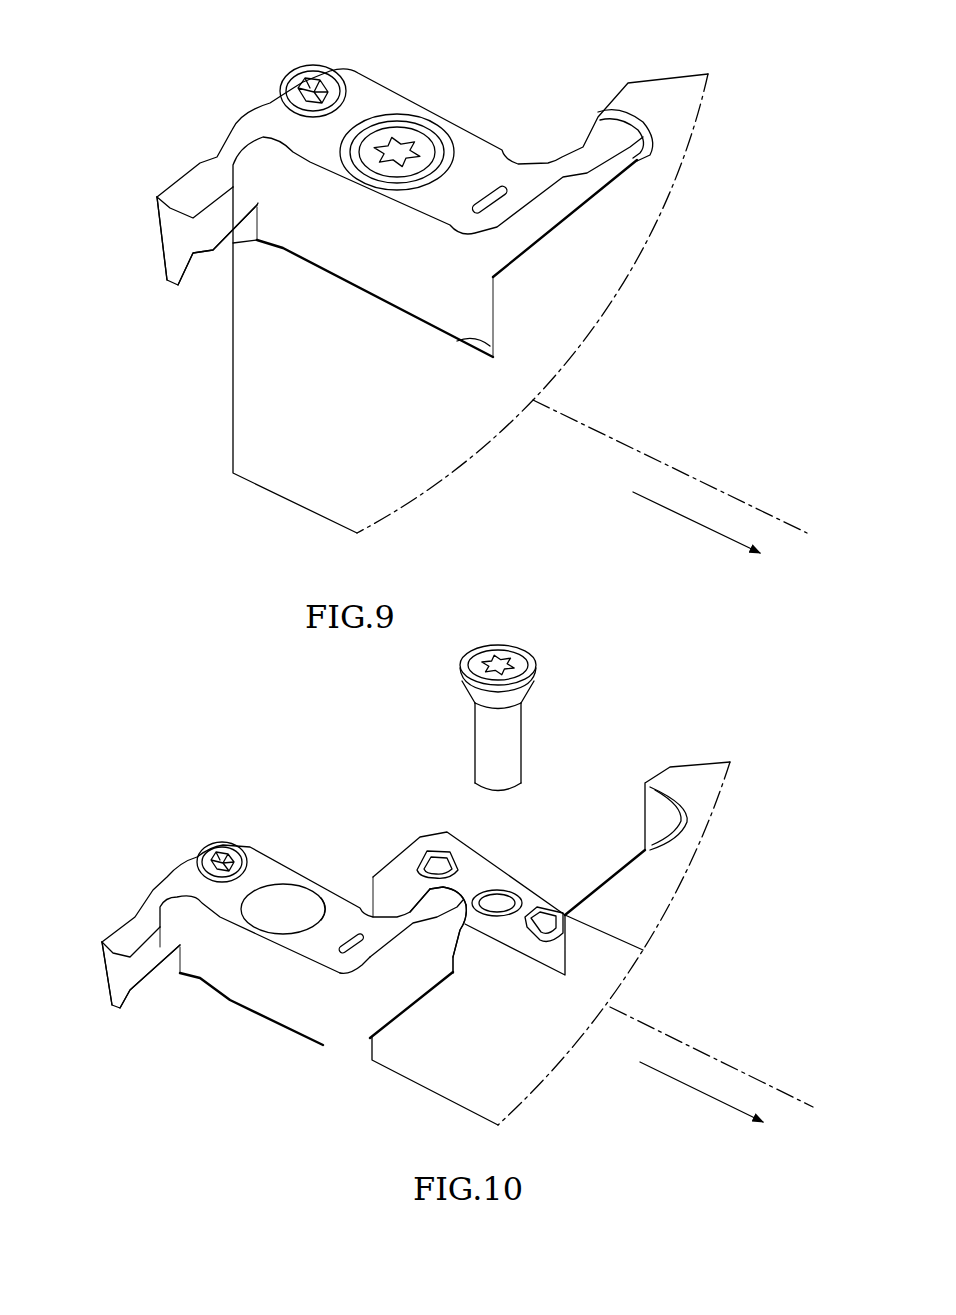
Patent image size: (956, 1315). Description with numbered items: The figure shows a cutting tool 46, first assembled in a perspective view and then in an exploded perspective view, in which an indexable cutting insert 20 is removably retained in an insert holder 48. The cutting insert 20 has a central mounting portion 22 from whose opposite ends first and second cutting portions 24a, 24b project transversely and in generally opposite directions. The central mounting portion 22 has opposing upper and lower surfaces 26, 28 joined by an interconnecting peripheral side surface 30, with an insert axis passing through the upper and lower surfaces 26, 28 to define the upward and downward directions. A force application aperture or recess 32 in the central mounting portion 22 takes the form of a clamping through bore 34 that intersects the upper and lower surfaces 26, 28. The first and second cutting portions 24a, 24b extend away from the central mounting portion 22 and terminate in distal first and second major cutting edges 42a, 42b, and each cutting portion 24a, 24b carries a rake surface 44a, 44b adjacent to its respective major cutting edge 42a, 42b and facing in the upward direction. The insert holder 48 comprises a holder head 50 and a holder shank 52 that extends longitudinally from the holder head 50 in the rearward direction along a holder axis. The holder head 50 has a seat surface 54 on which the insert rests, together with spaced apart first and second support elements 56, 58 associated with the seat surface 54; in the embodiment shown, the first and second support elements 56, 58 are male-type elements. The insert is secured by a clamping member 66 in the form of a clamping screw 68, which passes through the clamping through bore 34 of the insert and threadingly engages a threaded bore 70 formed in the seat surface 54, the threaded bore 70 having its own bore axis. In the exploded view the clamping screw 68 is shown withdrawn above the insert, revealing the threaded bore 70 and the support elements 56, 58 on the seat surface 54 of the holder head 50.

In FIG. 9, the indexable cutting insert 20 is at (270, 112).
In FIG. 10, the indexable cutting insert 20 is at (176, 866).
In FIG. 9, the central mounting portion 22 is at (330, 252).
In FIG. 10, the central mounting portion 22 is at (238, 977).
In FIG. 9, the first cutting portion 24a is at (155, 226).
In FIG. 10, the first cutting portion 24a is at (142, 966).
In FIG. 9, the second cutting portion 24b is at (588, 153).
In FIG. 10, the second cutting portion 24b is at (405, 962).
In FIG. 9, the upper surface 26 is at (356, 103).
In FIG. 10, the upper surface 26 is at (258, 862).
In FIG. 10, the lower surface 28 is at (320, 1052).
In FIG. 9, the peripheral side surface 30 is at (432, 302).
In FIG. 10, the peripheral side surface 30 is at (340, 1022).
In FIG. 10, the force application aperture or recess 32 is at (287, 898).
In FIG. 10, the clamping through bore 34 is at (300, 901).
In FIG. 9, the first major cutting edge 42a is at (155, 205).
In FIG. 10, the first major cutting edge 42a is at (108, 968).
In FIG. 10, the second major cutting edge 42b is at (462, 915).
In FIG. 9, the first rake surface 44a is at (190, 188).
In FIG. 10, the first rake surface 44a is at (122, 938).
In FIG. 10, the second rake surface 44b is at (430, 905).
In FIG. 9, the cutting tool 46 is at (483, 106).
In FIG. 10, the cutting tool 46 is at (551, 737).
In FIG. 9, the insert holder 48 is at (432, 452).
In FIG. 10, the insert holder 48 is at (535, 1050).
In FIG. 9, the holder head 50 is at (272, 351).
In FIG. 10, the holder head 50 is at (455, 1032).
In FIG. 9, the holder shank 52 is at (600, 278).
In FIG. 10, the holder shank 52 is at (652, 915).
In FIG. 10, the seat surface 54 is at (470, 860).
In FIG. 10, the first support element 56 is at (551, 914).
In FIG. 10, the second support element 58 is at (440, 858).
In FIG. 9, the clamping member 66 is at (402, 140).
In FIG. 10, the clamping member 66 is at (498, 653).
In FIG. 9, the clamping screw 68 is at (420, 147).
In FIG. 10, the clamping screw 68 is at (516, 654).
In FIG. 10, the threaded bore 70 is at (513, 896).